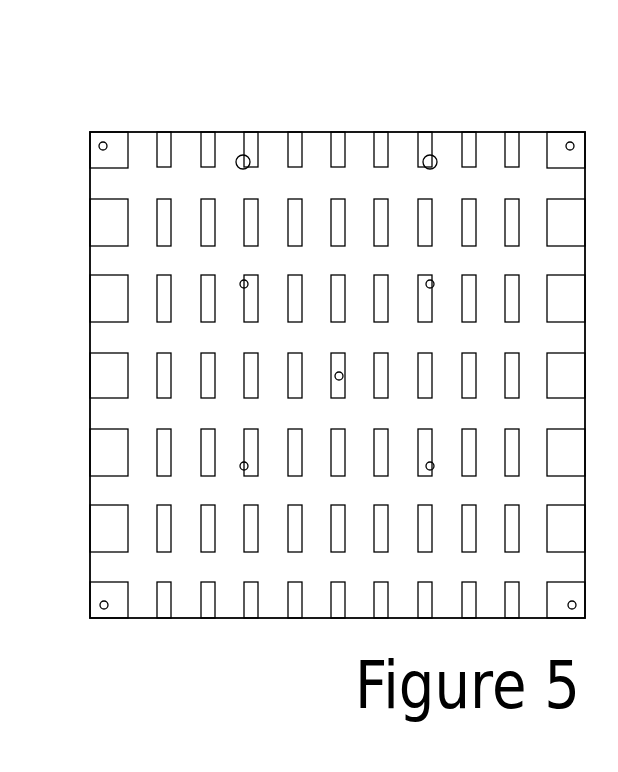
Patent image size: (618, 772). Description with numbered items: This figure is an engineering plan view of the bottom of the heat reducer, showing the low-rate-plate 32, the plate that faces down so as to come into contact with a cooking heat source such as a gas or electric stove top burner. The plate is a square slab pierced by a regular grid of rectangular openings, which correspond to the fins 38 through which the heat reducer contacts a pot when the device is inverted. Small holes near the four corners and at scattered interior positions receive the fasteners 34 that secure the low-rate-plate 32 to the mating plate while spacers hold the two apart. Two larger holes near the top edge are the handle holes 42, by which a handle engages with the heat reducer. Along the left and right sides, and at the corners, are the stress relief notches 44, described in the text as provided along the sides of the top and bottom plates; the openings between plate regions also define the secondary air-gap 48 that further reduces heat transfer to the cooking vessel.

The low-rate-plate 32 is at (343, 117).
The fastener 34 is at (100, 610).
The fins 38 is at (293, 153).
The handle holes 42 is at (435, 156).
The stress relief notch 44 is at (107, 568).
The secondary air-gap 48 is at (185, 150).